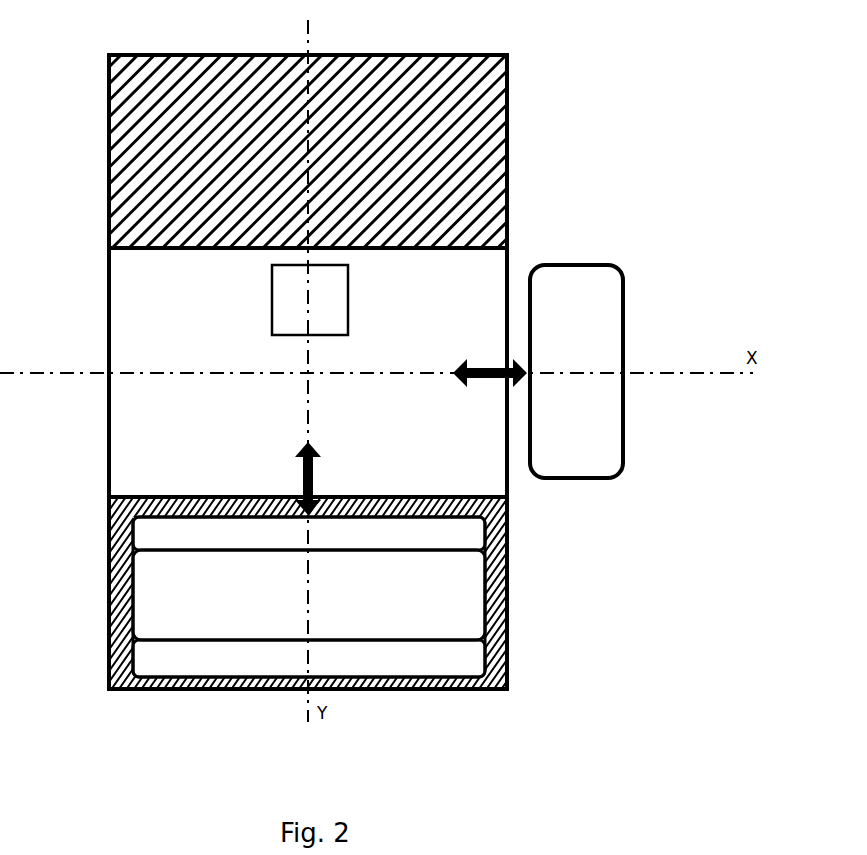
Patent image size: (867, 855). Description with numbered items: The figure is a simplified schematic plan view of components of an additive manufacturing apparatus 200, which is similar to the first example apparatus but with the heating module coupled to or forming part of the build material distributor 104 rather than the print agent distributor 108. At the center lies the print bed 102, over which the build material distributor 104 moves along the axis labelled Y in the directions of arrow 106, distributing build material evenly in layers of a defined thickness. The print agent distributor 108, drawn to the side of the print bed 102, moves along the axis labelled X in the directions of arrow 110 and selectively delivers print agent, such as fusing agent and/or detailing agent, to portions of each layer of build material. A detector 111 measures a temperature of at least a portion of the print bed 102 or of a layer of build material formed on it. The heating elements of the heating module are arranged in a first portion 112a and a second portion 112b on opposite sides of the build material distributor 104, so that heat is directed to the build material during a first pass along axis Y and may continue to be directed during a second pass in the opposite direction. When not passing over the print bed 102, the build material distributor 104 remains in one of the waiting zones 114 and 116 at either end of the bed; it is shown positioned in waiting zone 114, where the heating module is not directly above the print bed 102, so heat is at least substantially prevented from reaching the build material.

The apparatus 200 is at (571, 137).
The print bed 102 is at (155, 320).
The build material distributor 104 is at (145, 587).
The arrow 106 is at (327, 478).
The print agent distributor 108 is at (566, 464).
The arrow 110 is at (490, 365).
The detector 111 is at (306, 278).
The first portion 112a is at (145, 538).
The second portion 112b is at (145, 663).
The waiting zone 114 is at (468, 685).
The waiting zone 116 is at (400, 100).